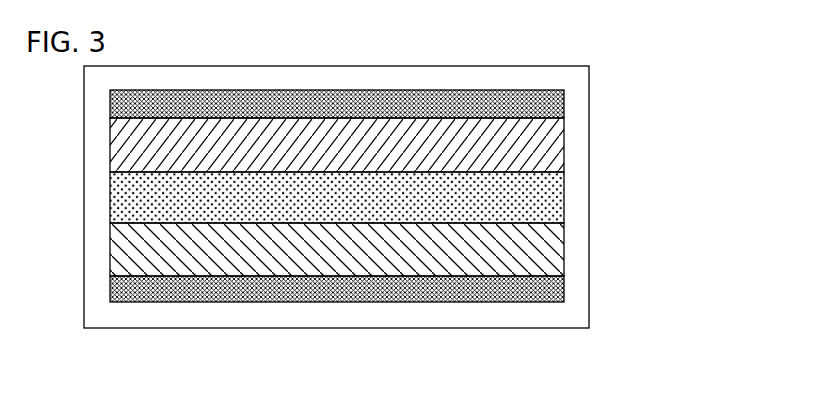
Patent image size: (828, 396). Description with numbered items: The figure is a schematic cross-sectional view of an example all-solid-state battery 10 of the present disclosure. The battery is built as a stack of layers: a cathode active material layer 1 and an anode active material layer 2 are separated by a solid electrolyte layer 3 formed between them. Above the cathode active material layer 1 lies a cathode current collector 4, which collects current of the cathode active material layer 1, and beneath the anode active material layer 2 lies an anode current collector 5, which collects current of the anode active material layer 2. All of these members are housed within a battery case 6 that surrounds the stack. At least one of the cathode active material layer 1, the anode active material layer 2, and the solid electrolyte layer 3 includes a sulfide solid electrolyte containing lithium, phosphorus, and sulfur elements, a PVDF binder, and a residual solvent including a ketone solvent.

The all-solid-state battery 10 is at (549, 52).
The cathode active material layer 1 is at (551, 141).
The anode active material layer 2 is at (552, 248).
The solid electrolyte layer 3 is at (548, 195).
The cathode current collector 4 is at (560, 100).
The anode current collector 5 is at (565, 287).
The battery case 6 is at (578, 314).